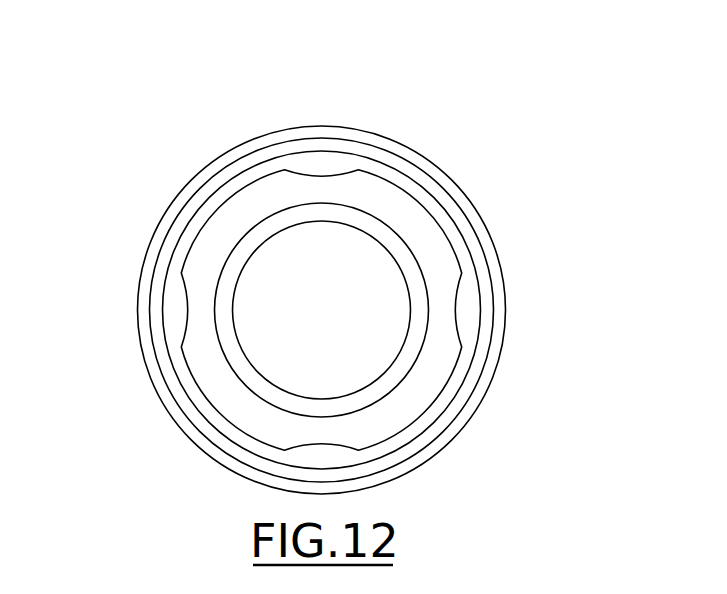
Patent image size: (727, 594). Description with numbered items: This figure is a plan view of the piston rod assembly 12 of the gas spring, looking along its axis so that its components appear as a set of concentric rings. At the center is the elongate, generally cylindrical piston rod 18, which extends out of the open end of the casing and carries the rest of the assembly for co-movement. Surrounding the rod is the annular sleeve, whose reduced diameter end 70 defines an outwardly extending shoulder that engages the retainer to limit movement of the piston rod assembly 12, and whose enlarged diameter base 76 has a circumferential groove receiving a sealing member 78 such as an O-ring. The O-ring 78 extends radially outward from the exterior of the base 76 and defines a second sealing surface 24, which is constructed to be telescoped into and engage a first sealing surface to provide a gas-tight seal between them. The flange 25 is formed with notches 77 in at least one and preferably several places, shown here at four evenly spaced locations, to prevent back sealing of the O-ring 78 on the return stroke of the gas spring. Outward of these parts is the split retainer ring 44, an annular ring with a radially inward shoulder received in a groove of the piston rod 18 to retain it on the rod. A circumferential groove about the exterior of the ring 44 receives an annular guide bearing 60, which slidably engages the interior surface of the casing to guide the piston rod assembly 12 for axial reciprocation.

The piston rod assembly 12 is at (128, 159).
The piston rod 18 is at (348, 296).
The second sealing surface 24 is at (352, 295).
The flange 25 is at (401, 186).
The retainer ring 44 is at (470, 220).
The guide bearing 60 is at (458, 185).
The reduced diameter end 70 is at (422, 272).
The enlarged diameter base 76 is at (311, 296).
The notches 77 is at (323, 176).
The sealing member 78 is at (311, 296).